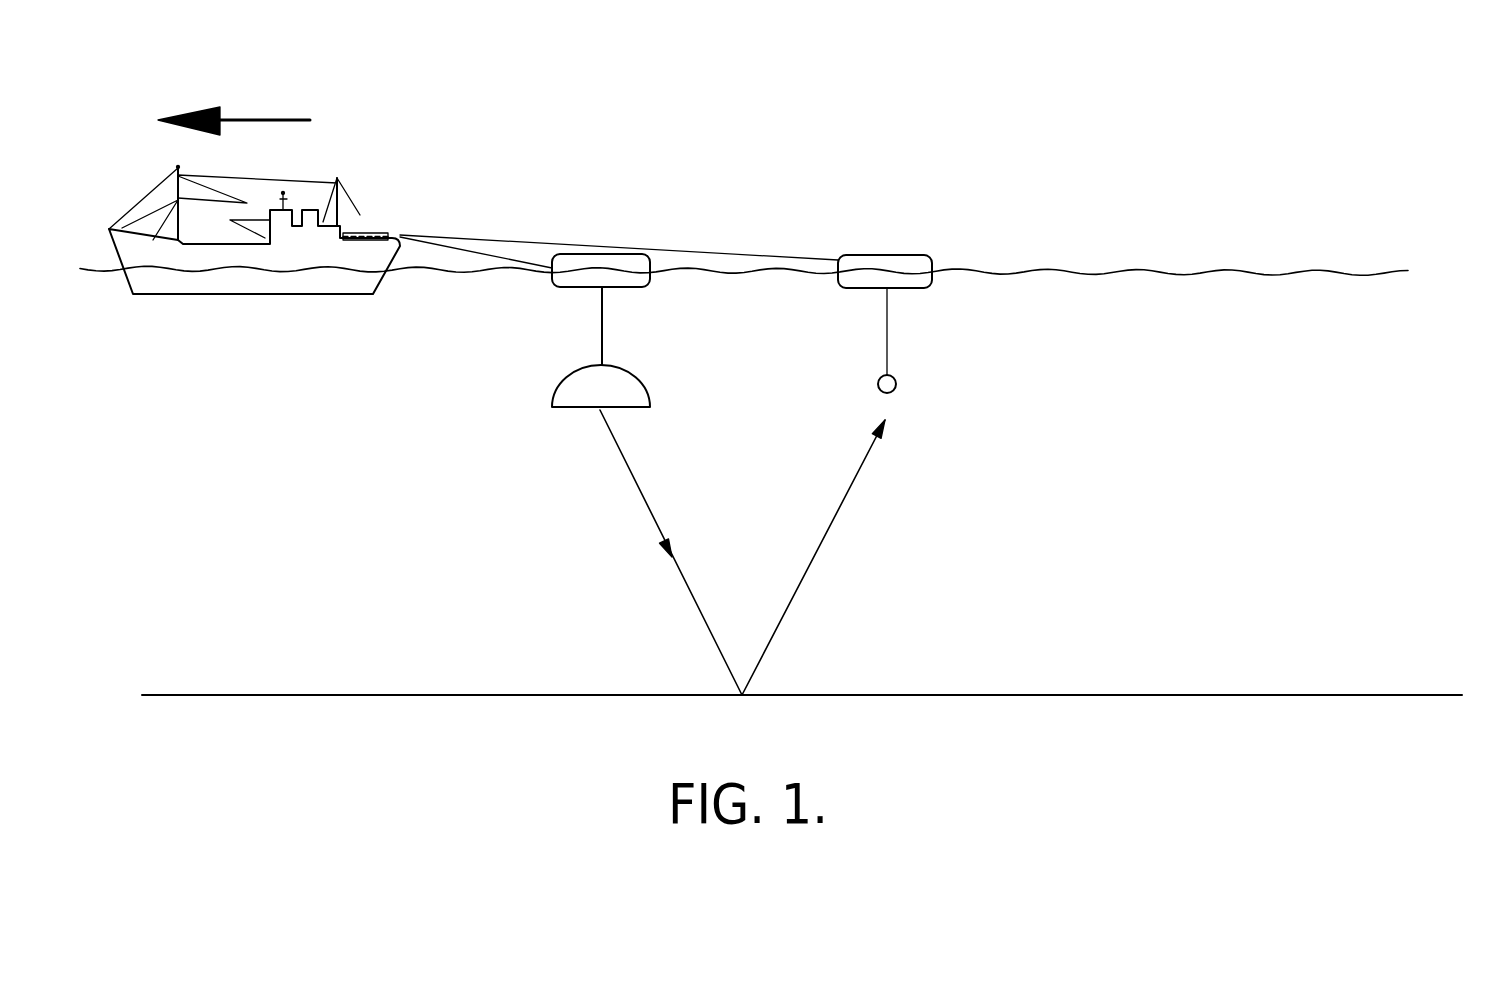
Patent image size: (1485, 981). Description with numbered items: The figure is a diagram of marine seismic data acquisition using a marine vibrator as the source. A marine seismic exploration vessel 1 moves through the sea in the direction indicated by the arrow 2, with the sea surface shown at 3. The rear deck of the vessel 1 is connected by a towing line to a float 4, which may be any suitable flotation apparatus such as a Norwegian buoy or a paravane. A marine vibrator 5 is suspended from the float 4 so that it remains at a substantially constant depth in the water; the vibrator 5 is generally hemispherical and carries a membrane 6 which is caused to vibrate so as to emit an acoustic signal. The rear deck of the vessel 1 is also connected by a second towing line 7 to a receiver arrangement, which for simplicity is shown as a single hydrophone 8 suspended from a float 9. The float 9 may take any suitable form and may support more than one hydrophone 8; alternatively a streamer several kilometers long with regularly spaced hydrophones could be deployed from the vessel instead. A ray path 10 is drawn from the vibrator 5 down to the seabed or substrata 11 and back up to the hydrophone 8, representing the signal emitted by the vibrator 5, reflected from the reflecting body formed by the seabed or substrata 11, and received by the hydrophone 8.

The marine seismic exploration vessel 1 is at (320, 250).
The arrow 2 is at (234, 98).
The sea surface 3 is at (1203, 272).
The float 4 is at (630, 278).
The marine vibrator 5 is at (618, 398).
The membrane 6 is at (570, 408).
The towing line 7 is at (708, 250).
The hydrophone 8 is at (892, 382).
The float 9 is at (917, 280).
The ray path 10 is at (797, 595).
The seabed or substrata 11 is at (1005, 695).